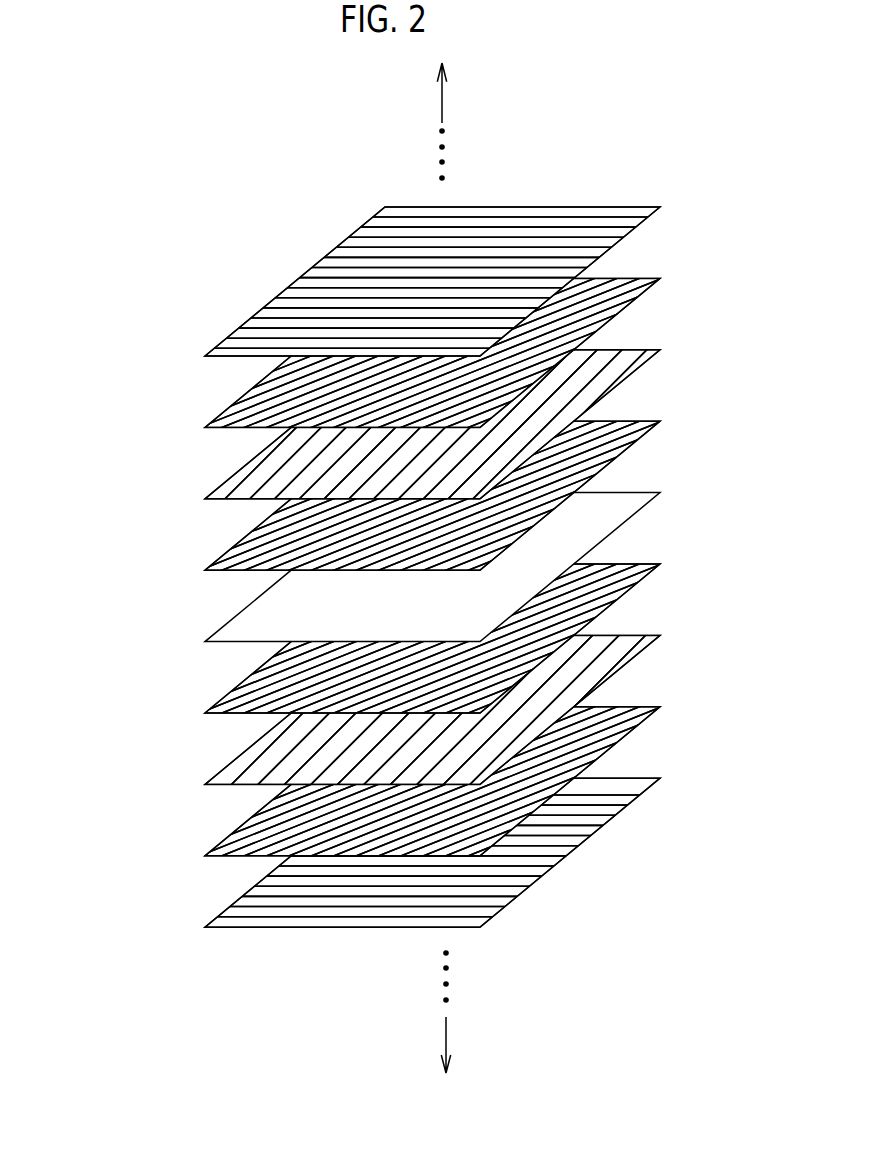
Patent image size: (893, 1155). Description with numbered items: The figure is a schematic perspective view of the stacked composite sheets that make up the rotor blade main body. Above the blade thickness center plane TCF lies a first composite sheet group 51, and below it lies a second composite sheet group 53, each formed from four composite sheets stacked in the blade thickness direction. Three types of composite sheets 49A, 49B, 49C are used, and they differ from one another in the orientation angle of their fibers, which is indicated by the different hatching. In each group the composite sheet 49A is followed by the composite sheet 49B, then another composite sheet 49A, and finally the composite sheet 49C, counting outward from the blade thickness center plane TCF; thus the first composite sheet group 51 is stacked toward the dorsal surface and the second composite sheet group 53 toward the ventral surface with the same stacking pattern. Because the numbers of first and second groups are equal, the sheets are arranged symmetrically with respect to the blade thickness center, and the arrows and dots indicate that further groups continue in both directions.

The composite sheet 49A is at (225, 428).
The composite sheet 49B is at (225, 499).
The composite sheet 49C is at (225, 357).
The blade thickness center plane TCF is at (638, 492).
The first composite sheet group 51 is at (84, 357).
The second composite sheet group 53 is at (84, 714).